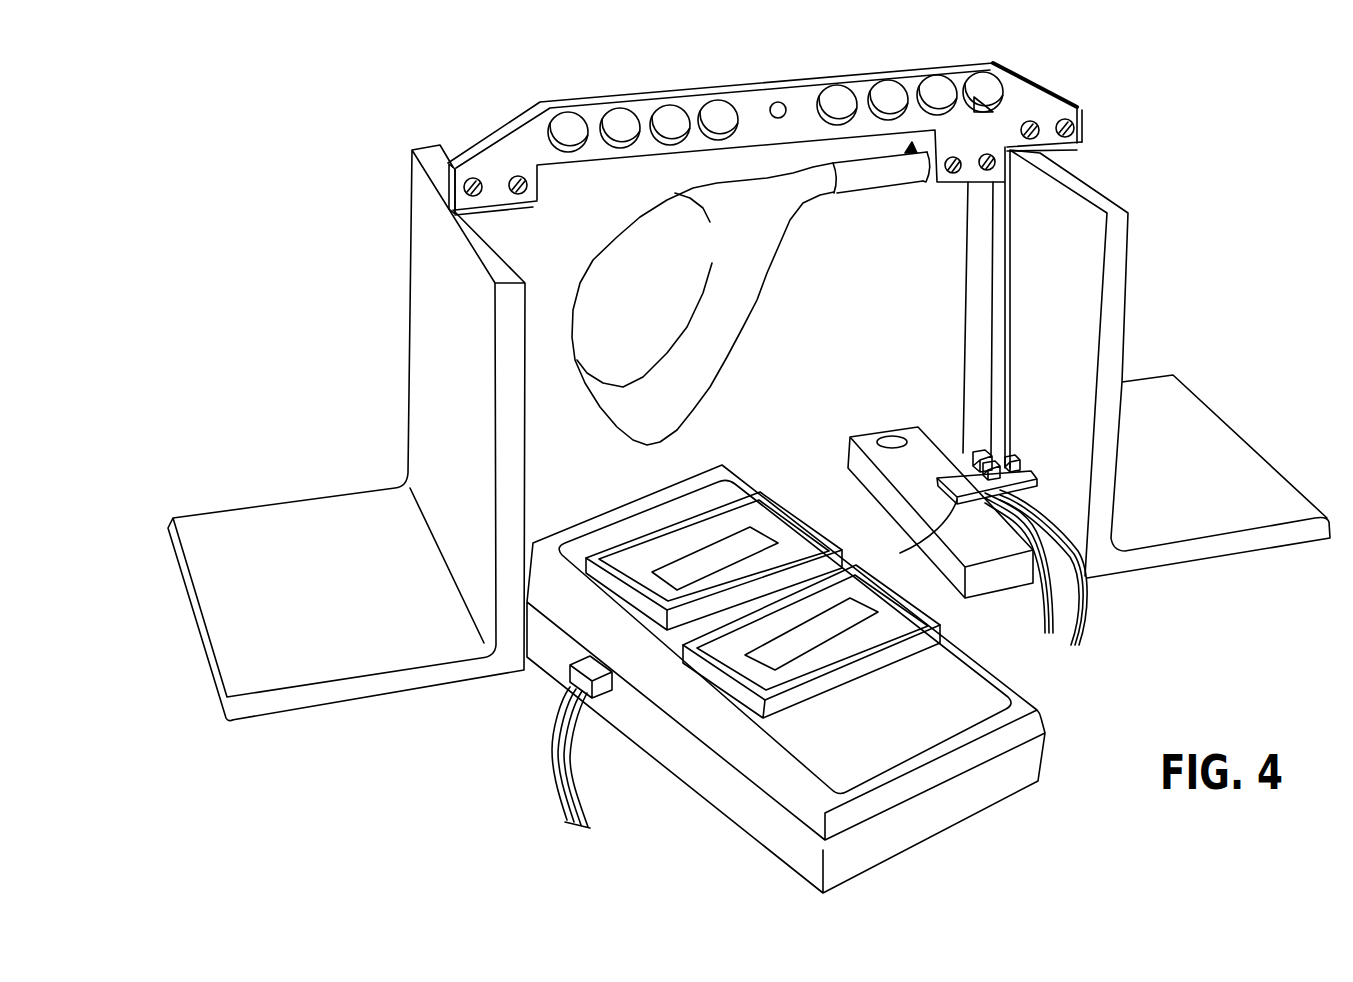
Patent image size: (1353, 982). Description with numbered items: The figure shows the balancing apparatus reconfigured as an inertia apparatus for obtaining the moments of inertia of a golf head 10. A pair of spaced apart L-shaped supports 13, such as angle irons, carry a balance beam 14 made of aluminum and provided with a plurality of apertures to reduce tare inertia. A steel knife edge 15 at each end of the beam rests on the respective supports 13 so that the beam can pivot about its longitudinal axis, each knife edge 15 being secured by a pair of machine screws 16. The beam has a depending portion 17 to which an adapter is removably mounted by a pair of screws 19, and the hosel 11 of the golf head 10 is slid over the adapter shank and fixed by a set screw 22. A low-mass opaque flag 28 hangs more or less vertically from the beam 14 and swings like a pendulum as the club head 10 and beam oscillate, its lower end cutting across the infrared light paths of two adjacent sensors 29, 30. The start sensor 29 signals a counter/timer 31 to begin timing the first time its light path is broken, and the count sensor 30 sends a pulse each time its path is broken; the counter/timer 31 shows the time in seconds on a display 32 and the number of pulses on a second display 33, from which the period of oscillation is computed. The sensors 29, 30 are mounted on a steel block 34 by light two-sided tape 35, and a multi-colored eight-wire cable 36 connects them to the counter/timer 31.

The golf head 10 is at (750, 340).
The hosel 11 is at (860, 185).
The supports 13 is at (304, 505).
The balance beam 14 is at (700, 95).
The knife edge 15 is at (522, 202).
The machine screws 16 is at (518, 194).
The depending portion 17 is at (977, 172).
The screws 19 is at (973, 162).
The set screw 22 is at (930, 177).
The flag 28 is at (995, 310).
The start sensor 29 is at (978, 495).
The count sensor 30 is at (963, 540).
The counter/timer 31 is at (786, 679).
The display 32 is at (753, 538).
The second display 33 is at (850, 617).
The steel block 34 is at (900, 430).
The two-sided tape 35 is at (955, 472).
The cable 36 is at (1060, 607).